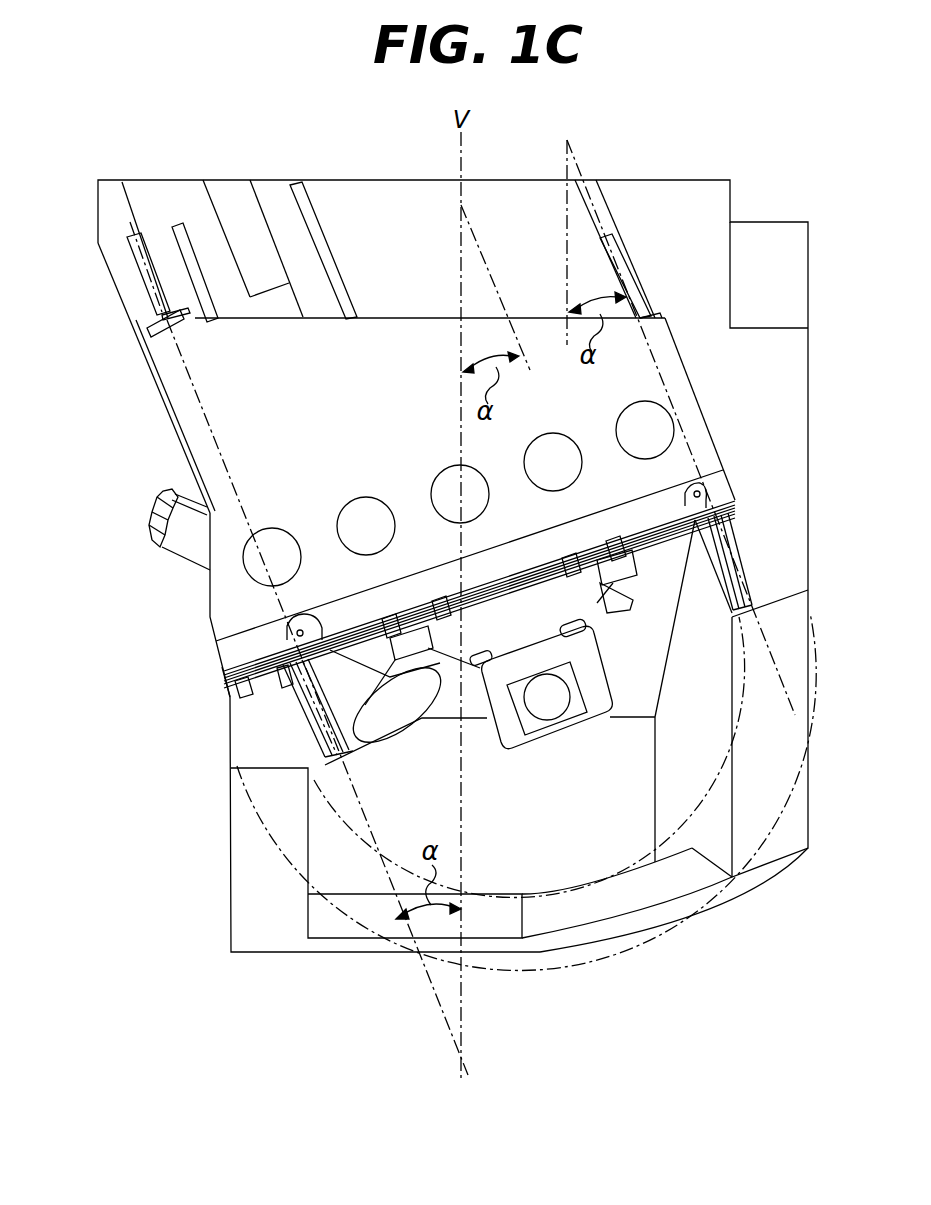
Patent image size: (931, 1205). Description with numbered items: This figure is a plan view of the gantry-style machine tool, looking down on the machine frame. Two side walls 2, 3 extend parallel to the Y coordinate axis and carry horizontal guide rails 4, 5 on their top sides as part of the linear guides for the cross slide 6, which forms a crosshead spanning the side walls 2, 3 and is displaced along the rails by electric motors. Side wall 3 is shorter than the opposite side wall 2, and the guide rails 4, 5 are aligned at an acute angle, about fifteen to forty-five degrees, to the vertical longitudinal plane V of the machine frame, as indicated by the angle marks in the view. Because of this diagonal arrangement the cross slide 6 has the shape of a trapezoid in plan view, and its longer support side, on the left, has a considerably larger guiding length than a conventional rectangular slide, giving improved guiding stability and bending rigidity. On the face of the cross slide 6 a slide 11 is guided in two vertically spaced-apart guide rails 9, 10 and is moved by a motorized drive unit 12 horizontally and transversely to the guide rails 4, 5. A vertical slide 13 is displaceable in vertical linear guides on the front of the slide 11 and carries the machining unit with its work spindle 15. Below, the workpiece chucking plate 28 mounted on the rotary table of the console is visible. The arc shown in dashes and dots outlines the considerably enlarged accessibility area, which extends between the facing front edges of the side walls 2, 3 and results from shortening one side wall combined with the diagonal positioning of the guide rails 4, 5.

The side wall 2 is at (172, 442).
The side wall 3 is at (795, 412).
The horizontal guide rail 4 is at (148, 283).
The horizontal guide rail 5 is at (612, 242).
The cross slide 6 is at (465, 479).
The guide rail 9 is at (726, 506).
The guide rail 10 is at (225, 678).
The slide 11 is at (430, 677).
The motorized drive unit 12 is at (152, 532).
The vertical slide 13 is at (585, 660).
The work spindle 15 is at (548, 705).
The workpiece chucking plate 28 is at (633, 600).